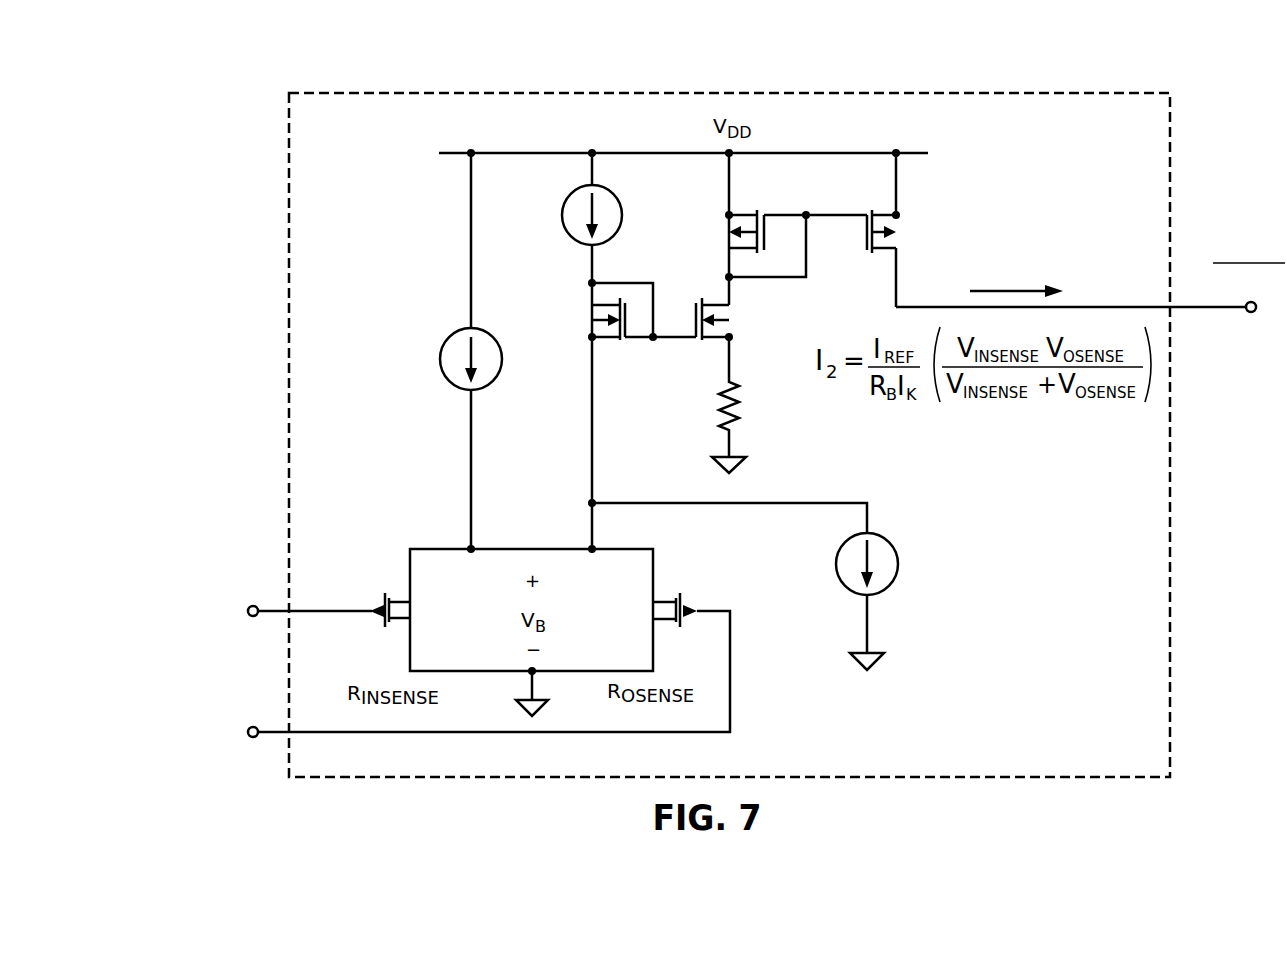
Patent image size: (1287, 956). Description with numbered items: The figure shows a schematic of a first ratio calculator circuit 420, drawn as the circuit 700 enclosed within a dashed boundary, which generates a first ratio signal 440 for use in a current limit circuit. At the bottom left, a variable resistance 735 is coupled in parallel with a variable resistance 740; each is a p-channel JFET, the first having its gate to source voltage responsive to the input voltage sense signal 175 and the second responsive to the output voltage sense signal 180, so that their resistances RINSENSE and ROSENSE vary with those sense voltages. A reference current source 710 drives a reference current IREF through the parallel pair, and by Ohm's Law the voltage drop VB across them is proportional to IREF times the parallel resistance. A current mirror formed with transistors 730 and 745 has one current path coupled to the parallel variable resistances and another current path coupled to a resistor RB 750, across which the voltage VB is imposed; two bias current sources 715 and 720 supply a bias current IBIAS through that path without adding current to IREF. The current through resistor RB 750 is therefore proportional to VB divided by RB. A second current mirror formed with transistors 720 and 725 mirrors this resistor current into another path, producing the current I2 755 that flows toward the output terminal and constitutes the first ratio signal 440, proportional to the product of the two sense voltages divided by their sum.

The first ratio calculator circuit 420 is at (380, 85).
The first ratio calculator circuit 700 is at (173, 309).
The reference current source 710 is at (443, 332).
The bias current source 715 is at (632, 207).
The bias current source 720 is at (747, 199).
The transistor 725 is at (878, 199).
The transistor 730 is at (585, 311).
The variable resistance 735 is at (393, 592).
The variable resistance 740 is at (672, 590).
The transistor 745 is at (712, 290).
The resistor RB 750 is at (712, 400).
The output current I2 755 is at (1035, 273).
The input voltage sense signal 175 is at (268, 600).
The output voltage sense signal 180 is at (268, 742).
The first ratio signal 440 is at (1207, 315).